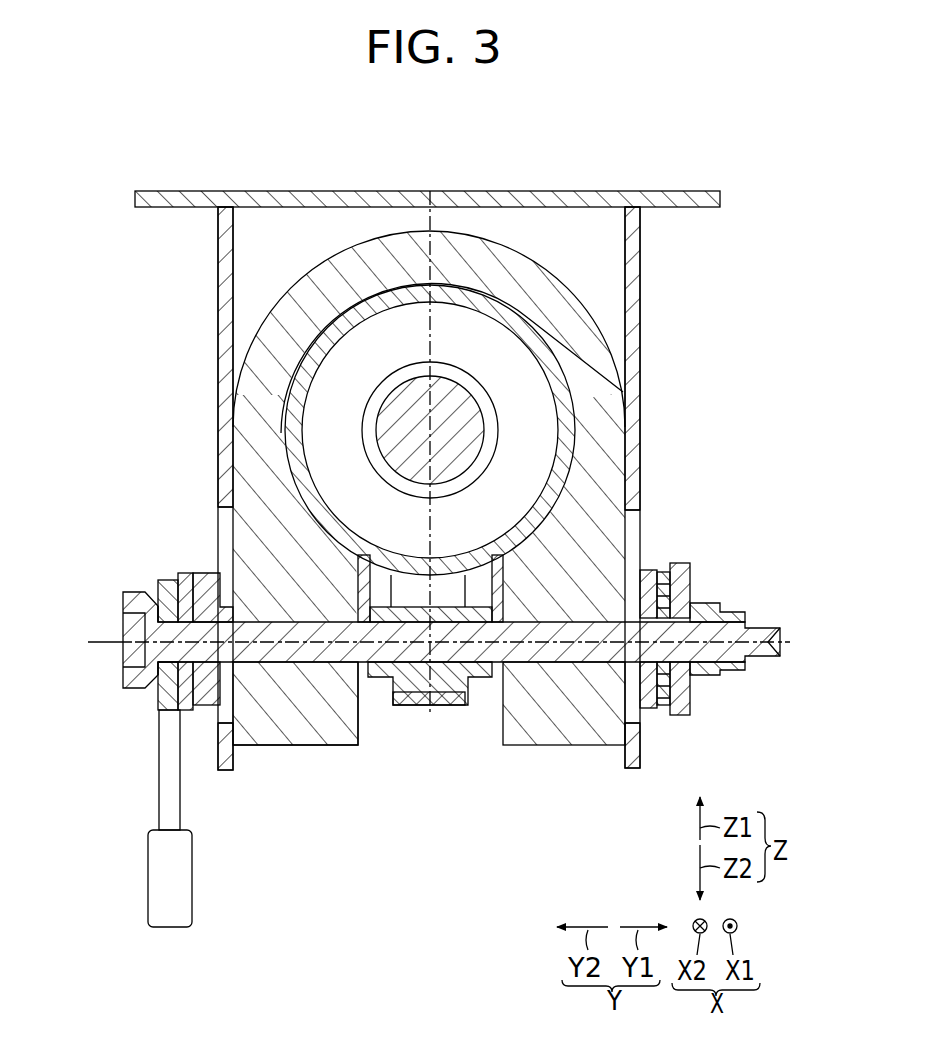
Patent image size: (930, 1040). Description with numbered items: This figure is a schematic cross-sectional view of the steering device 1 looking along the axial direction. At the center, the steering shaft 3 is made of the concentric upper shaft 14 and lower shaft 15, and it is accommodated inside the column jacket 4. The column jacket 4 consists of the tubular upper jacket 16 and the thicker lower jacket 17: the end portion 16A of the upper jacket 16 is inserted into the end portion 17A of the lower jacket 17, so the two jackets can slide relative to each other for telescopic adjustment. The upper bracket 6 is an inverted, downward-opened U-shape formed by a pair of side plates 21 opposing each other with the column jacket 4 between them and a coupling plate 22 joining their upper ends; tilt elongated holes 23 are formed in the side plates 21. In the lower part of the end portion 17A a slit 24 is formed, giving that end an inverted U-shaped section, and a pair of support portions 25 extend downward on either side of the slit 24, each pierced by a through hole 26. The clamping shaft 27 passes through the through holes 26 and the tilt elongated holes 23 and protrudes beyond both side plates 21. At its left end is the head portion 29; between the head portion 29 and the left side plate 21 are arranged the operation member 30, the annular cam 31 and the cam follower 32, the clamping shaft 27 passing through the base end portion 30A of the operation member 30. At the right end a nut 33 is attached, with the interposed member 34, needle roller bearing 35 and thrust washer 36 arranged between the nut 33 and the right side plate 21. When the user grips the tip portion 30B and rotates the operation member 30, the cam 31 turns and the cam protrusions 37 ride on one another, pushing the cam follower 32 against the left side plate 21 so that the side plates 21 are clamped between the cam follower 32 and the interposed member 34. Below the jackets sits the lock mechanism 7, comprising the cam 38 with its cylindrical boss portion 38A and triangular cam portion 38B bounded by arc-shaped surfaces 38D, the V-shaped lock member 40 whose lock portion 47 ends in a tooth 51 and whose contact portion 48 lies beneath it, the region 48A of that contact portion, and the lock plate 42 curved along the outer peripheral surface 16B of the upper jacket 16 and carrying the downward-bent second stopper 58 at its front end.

The steering device 1 is at (442, 913).
The steering shaft 3 is at (315, 428).
The column jacket 4 is at (478, 415).
The upper bracket 6 is at (427, 444).
The lock mechanism 7 is at (429, 647).
The upper shaft 14 is at (373, 393).
The lower shaft 15 is at (388, 430).
The upper jacket 16 is at (495, 402).
The end portion of the upper jacket 16A is at (530, 333).
The outer peripheral surface of the upper jacket 16B is at (578, 437).
The lower jacket 17 is at (461, 415).
The end portion of the lower jacket 17A is at (507, 260).
The side plate 21 is at (222, 272).
The coupling plate 22 is at (565, 190).
The tilt elongated hole 23 is at (230, 508).
The slit 24 is at (362, 748).
The support portion 25 is at (307, 722).
The through hole 26 is at (278, 652).
The clamping shaft 27 is at (762, 635).
The head portion 29 is at (138, 594).
The operation member 30 is at (176, 713).
The base end portion of the operation member 30A is at (168, 582).
The tip portion of the operation member 30B is at (184, 908).
The cam 31 is at (180, 683).
The cam follower 32 is at (177, 694).
The nut 33 is at (710, 605).
The interposed member 34 is at (650, 702).
The needle roller bearing 35 is at (665, 702).
The thrust washer 36 is at (688, 697).
The cam protrusion 37 is at (198, 578).
The cam 38 is at (393, 677).
The boss portion 38A is at (505, 560).
The cam portion 38B is at (420, 712).
The arc-shaped surface 38D is at (451, 714).
The lock member 40 is at (443, 712).
The lock plate 42 is at (364, 590).
The lock portion 47 is at (467, 568).
The contact portion 48 is at (469, 708).
The fixing portion 48A is at (476, 704).
The tooth 51 is at (422, 590).
The second stopper 58 is at (360, 585).